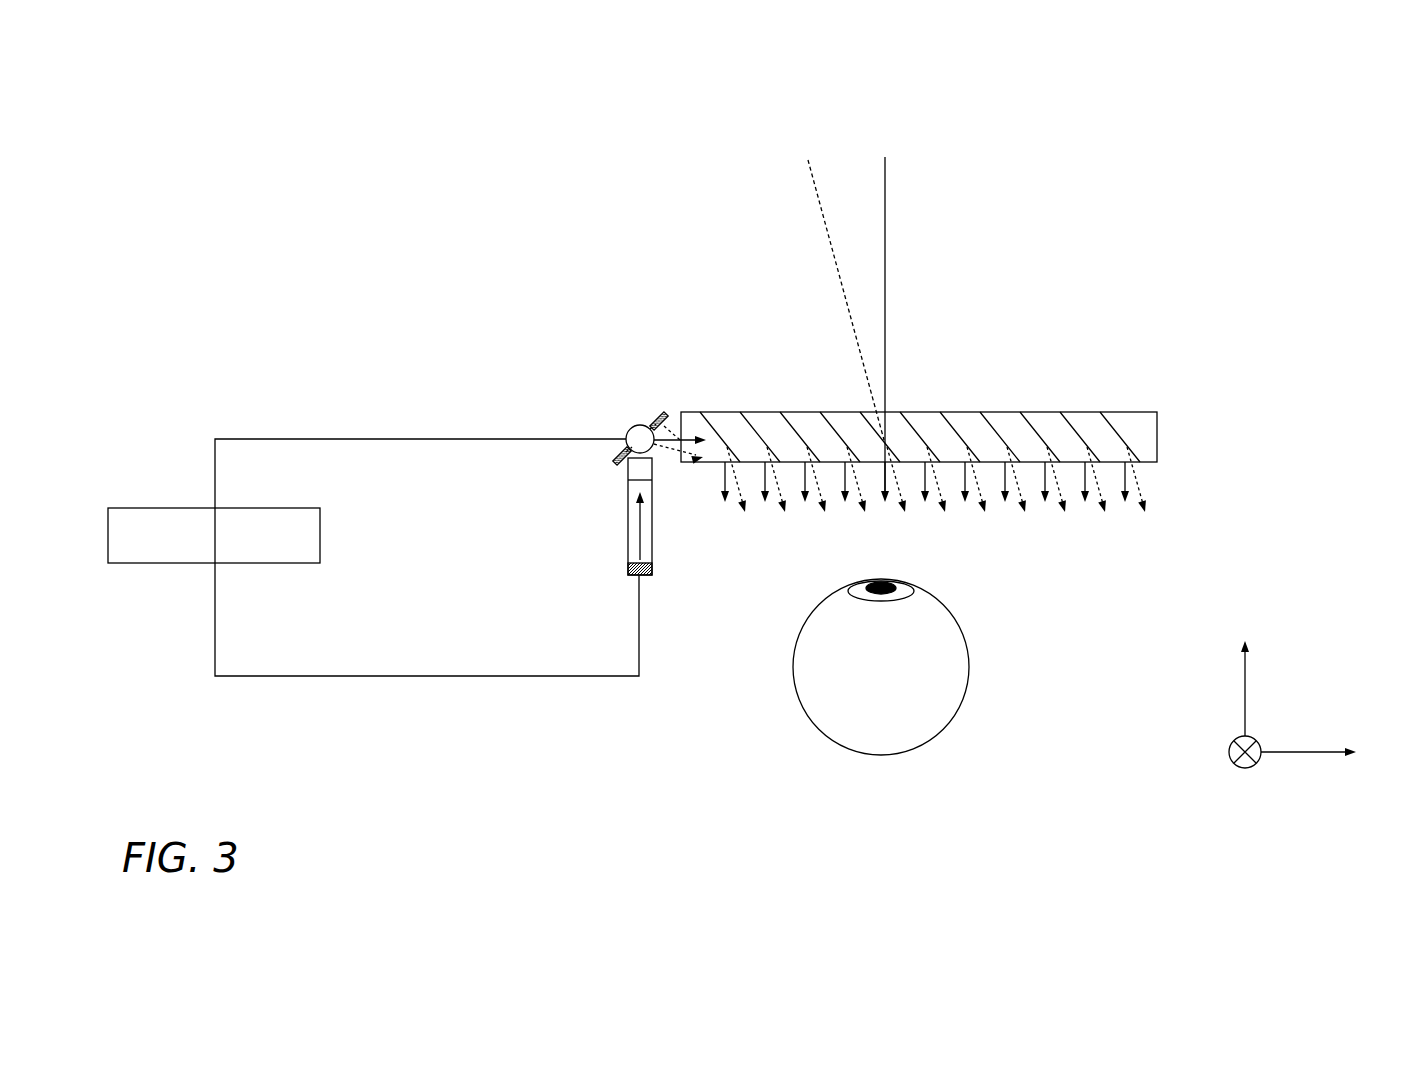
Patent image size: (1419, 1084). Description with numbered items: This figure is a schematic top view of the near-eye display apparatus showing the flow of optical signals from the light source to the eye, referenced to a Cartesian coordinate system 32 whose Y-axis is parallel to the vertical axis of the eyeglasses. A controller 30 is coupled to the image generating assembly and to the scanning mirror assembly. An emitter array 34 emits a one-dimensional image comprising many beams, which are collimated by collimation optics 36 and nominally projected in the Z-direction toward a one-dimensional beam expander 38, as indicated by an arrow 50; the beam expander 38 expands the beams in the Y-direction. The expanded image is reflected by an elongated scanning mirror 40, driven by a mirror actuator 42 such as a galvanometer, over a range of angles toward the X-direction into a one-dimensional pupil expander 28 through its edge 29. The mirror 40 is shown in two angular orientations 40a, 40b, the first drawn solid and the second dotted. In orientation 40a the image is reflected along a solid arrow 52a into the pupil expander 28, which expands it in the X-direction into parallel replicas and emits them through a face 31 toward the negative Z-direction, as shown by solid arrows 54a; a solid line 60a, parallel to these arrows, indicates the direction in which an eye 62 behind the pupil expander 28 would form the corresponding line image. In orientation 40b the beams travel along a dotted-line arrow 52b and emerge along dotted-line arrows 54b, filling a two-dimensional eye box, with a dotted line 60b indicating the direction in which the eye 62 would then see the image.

The 1D pupil expander 28 is at (1146, 430).
The edge 29 is at (688, 432).
The controller 30 is at (137, 564).
The face 31 is at (928, 535).
The Cartesian coordinate system 32 is at (1300, 682).
The emitter array 34 is at (628, 573).
The collimation optics 36 is at (628, 553).
The 1D beam expander 38 is at (643, 468).
The first scanning mirror 40 is at (595, 414).
The first angular orientation of scanning mirror 40a is at (623, 463).
The second angular orientation of scanning mirror 40b is at (616, 451).
The mirror actuator 42 is at (638, 424).
The arrow 50 is at (643, 523).
The solid arrow 52a is at (673, 437).
The dotted-line arrow 52b is at (685, 463).
The solid arrows 54a is at (765, 498).
The dotted-line arrows 54b is at (823, 512).
The solid line 60a is at (885, 297).
The dotted line 60b is at (810, 177).
The eye 62 is at (876, 733).